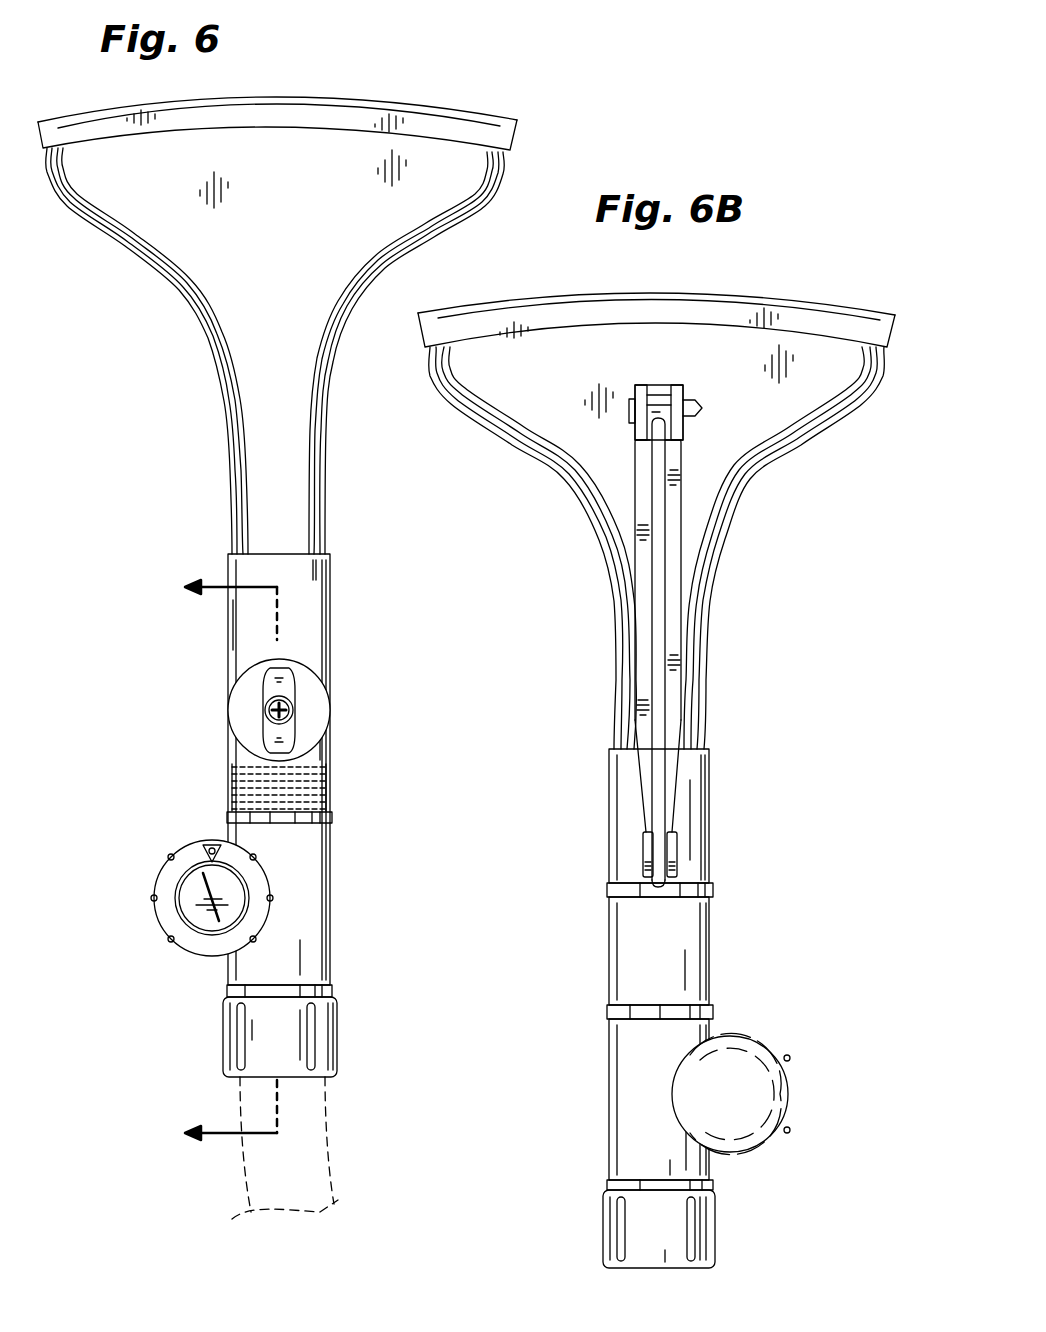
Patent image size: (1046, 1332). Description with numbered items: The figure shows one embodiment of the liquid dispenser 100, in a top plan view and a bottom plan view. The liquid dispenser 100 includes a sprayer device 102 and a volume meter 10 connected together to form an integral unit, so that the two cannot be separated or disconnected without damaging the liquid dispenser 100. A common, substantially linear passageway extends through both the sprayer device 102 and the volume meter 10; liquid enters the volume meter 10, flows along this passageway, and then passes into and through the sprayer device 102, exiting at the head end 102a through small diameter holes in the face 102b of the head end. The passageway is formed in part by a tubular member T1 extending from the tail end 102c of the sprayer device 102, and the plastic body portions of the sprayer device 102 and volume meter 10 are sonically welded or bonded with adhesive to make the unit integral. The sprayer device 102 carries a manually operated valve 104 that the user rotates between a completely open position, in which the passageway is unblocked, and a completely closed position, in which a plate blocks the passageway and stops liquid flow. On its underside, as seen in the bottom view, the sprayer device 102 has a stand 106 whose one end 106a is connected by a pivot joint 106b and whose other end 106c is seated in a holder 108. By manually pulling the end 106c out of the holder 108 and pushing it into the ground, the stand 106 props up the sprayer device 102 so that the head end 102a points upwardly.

In FIG. 6, the volume meter 10 is at (342, 958).
In FIG. 6B, the volume meter 10 is at (594, 1115).
In FIG. 6, the liquid dispenser 100 is at (100, 306).
In FIG. 6B, the liquid dispenser 100 is at (764, 521).
In FIG. 6, the sprayer device 102 is at (252, 366).
In FIG. 6B, the sprayer device 102 is at (700, 597).
In FIG. 6, the head end 102a is at (440, 160).
In FIG. 6B, the head end 102a is at (810, 347).
In FIG. 6, the face 102b is at (340, 95).
In FIG. 6B, the face 102b is at (738, 296).
In FIG. 6, the tail end 102c is at (295, 466).
In FIG. 6B, the tail end 102c is at (702, 689).
In FIG. 6, the manually operated valve 104 is at (311, 715).
In FIG. 6B, the stand 106 is at (663, 579).
In FIG. 6B, the one end of stand 106a is at (663, 387).
In FIG. 6B, the pivot joint 106b is at (629, 401).
In FIG. 6B, the other end of stand 106c is at (670, 812).
In FIG. 6B, the holder 108 is at (647, 858).
In FIG. 6, the tubular member T1 is at (313, 581).